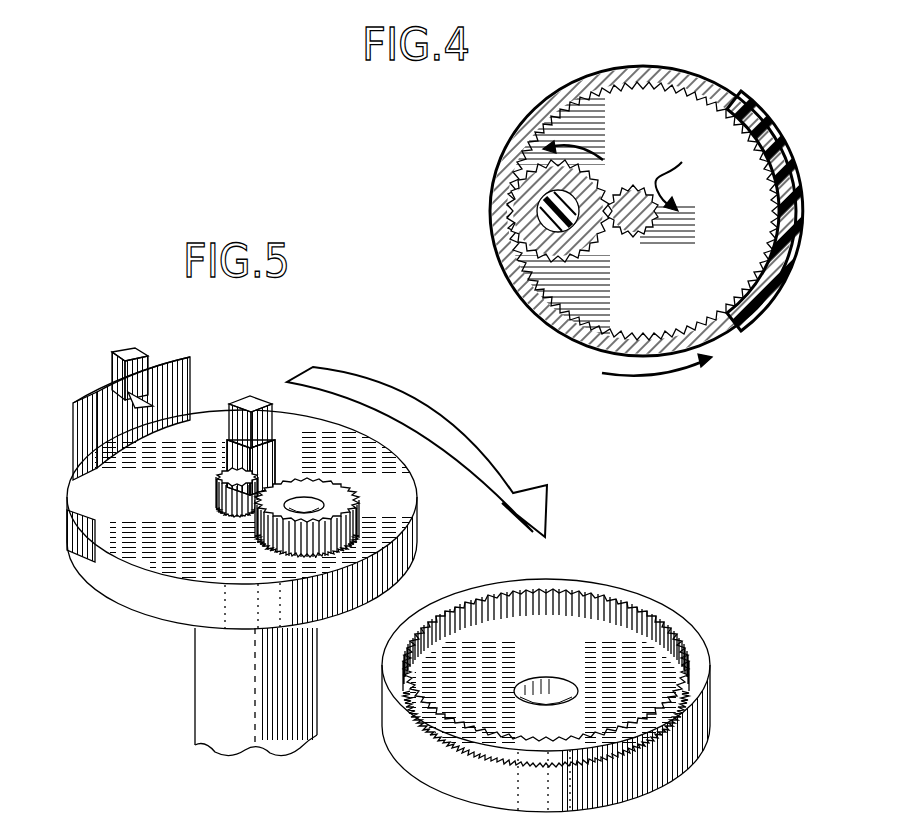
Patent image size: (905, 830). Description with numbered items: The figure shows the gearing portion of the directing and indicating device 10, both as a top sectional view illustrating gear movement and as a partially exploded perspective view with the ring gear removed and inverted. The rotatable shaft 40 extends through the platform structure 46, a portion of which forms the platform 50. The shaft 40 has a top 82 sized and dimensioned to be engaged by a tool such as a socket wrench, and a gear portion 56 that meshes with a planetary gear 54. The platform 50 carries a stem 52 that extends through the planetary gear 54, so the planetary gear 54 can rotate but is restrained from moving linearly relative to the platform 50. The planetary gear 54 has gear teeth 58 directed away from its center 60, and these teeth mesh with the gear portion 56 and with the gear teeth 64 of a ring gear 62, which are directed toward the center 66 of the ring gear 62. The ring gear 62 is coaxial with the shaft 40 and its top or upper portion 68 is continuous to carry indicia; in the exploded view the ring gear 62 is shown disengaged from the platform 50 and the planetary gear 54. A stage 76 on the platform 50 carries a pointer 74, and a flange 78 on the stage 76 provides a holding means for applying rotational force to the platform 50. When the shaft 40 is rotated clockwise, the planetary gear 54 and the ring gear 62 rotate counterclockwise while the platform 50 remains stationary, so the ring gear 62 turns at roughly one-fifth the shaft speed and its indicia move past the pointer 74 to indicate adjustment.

In FIG. 4, the directing and indicating device 10 is at (733, 84).
In FIG. 5, the directing and indicating device 10 is at (53, 511).
In FIG. 4, the rotatable shaft 40 is at (680, 173).
In FIG. 5, the rotatable shaft 40 is at (248, 402).
In FIG. 5, the platform structure 46 is at (190, 632).
In FIG. 4, the platform 50 is at (742, 331).
In FIG. 5, the platform 50 is at (150, 583).
In FIG. 4, the stem 52 is at (522, 220).
In FIG. 5, the stem 52 is at (333, 472).
In FIG. 4, the planetary gear 54 is at (518, 168).
In FIG. 5, the planetary gear 54 is at (290, 480).
In FIG. 4, the gear portion 56 is at (644, 238).
In FIG. 5, the gear portion 56 is at (218, 488).
In FIG. 4, the gear teeth 58 is at (585, 258).
In FIG. 5, the gear teeth 58 is at (355, 520).
In FIG. 4, the center 60 is at (598, 170).
In FIG. 5, the center 60 is at (265, 535).
In FIG. 4, the ring gear 62 is at (632, 230).
In FIG. 5, the ring gear 62 is at (567, 680).
In FIG. 4, the gear teeth 64 is at (580, 325).
In FIG. 5, the gear teeth 64 is at (578, 595).
In FIG. 4, the center 66 is at (645, 220).
In FIG. 5, the center 66 is at (567, 662).
In FIG. 5, the top or upper portion 68 is at (625, 800).
In FIG. 5, the pointer 74 is at (150, 398).
In FIG. 4, the stage 76 is at (780, 305).
In FIG. 5, the stage 76 is at (75, 440).
In FIG. 5, the flange 78 is at (122, 350).
In FIG. 5, the top 82 is at (252, 403).